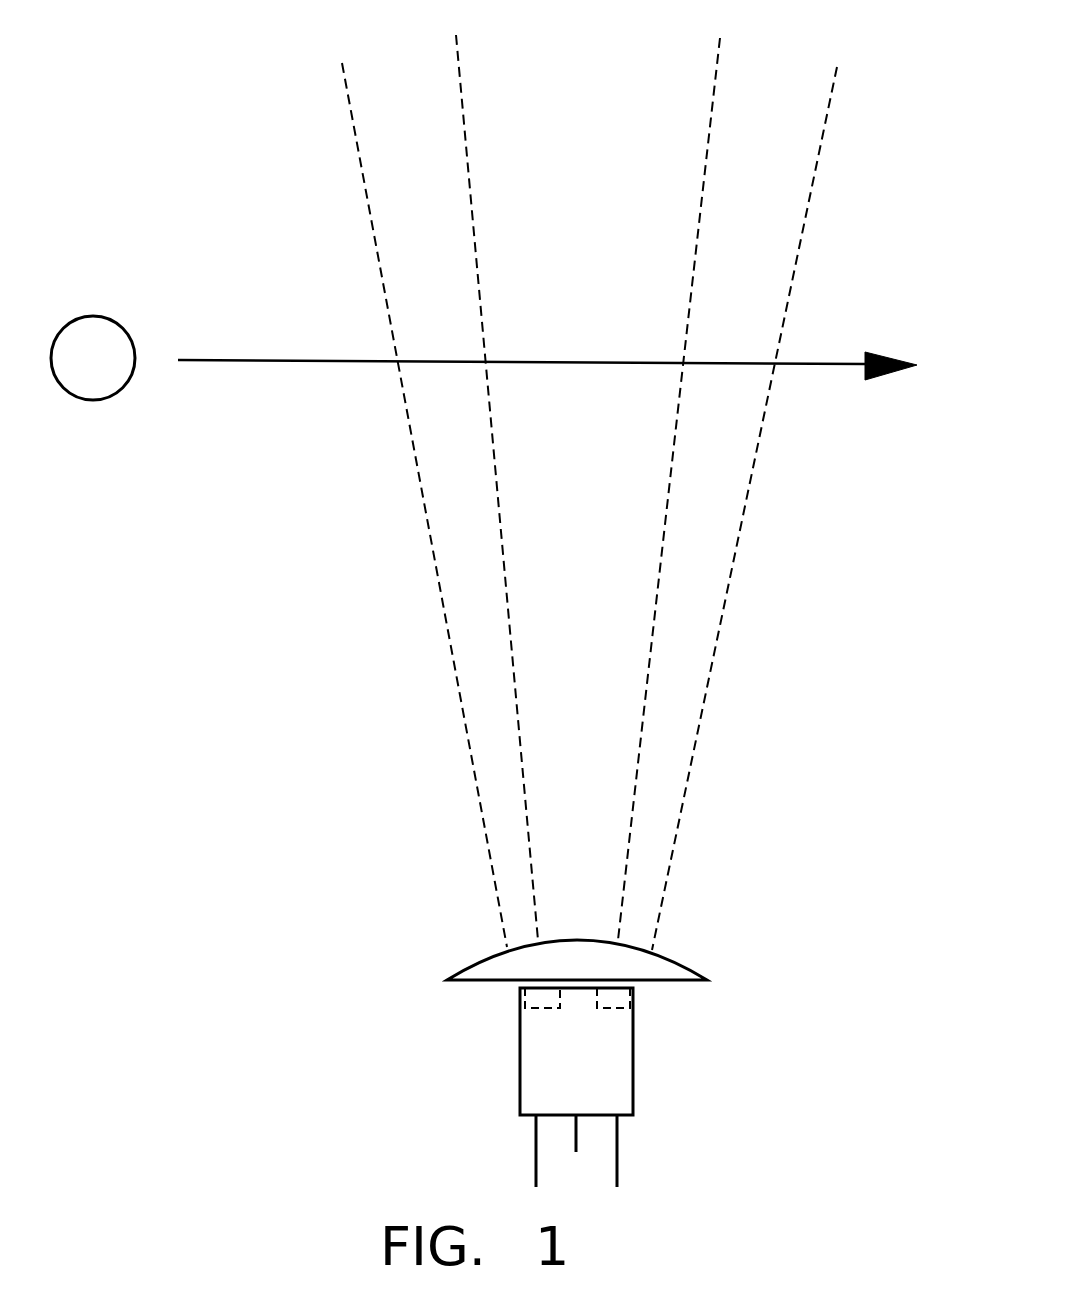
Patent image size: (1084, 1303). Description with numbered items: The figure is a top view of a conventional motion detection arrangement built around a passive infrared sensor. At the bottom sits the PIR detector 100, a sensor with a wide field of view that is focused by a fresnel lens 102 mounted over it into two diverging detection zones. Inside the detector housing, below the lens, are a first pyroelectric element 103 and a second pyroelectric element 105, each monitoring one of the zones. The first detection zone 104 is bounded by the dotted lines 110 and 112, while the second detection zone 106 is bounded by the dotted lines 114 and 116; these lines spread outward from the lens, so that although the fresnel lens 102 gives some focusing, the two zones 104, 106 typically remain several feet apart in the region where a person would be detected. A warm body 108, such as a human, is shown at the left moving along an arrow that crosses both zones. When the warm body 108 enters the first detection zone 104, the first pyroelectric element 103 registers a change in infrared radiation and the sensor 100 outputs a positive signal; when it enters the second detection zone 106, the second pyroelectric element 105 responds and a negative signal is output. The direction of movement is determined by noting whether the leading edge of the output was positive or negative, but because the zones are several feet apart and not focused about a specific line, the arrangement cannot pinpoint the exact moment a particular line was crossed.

The PIR detector 100 is at (618, 1095).
The fresnel lens 102 is at (665, 968).
The first pyroelectric element 103 is at (540, 998).
The first detection zone 104 is at (447, 262).
The second pyroelectric element 105 is at (615, 998).
The second detection zone 106 is at (775, 263).
The warm body 108 is at (110, 398).
The dotted line 110 is at (348, 97).
The dotted line 112 is at (462, 90).
The dotted line 114 is at (715, 86).
The dotted line 116 is at (828, 110).